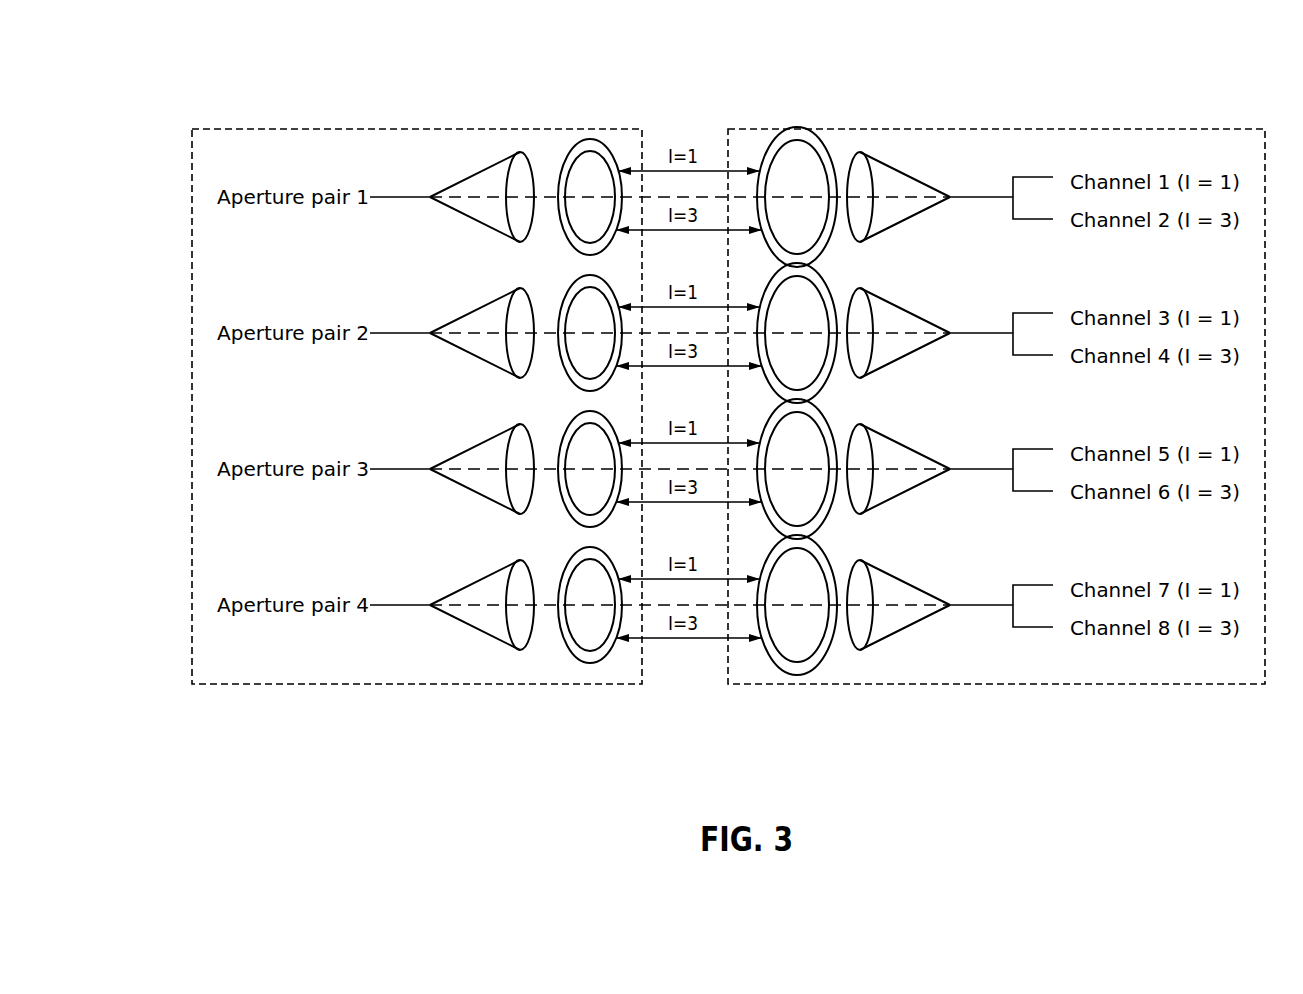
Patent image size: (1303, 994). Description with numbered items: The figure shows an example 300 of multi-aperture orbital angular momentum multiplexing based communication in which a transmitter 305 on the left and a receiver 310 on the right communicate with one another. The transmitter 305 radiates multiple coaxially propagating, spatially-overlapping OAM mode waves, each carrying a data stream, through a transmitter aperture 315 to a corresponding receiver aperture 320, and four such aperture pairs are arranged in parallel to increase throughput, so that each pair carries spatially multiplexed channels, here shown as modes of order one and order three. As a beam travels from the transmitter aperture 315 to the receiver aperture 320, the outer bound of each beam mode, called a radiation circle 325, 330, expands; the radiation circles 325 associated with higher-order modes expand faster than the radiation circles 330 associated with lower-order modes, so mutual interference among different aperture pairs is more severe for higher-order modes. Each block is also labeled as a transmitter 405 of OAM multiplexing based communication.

The example of multi-aperture OAM multiplexing based communication 300 is at (230, 36).
The transmitter 305 is at (415, 128).
The receiver 310 is at (998, 128).
The transmitter aperture 315 is at (445, 207).
The receiver aperture 320 is at (912, 218).
The radiation circle 325 is at (601, 146).
The radiation circle 330 is at (613, 165).
The transmitter 405 is at (436, 432).